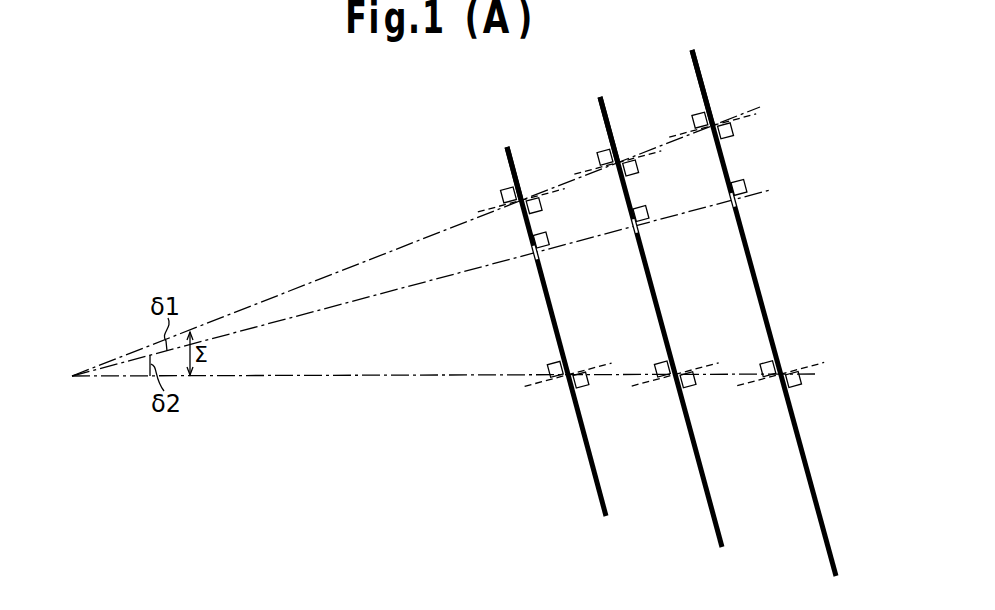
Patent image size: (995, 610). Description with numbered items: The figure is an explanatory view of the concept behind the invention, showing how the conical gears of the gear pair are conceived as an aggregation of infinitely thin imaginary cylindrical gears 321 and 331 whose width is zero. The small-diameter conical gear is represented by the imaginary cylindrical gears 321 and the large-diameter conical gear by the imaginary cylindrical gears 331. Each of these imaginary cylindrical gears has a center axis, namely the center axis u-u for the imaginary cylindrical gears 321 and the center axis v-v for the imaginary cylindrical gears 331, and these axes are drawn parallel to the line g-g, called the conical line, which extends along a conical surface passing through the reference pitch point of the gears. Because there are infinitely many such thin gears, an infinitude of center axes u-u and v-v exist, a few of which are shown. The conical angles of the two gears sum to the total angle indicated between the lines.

The imaginary cylindrical gear 321 is at (509, 168).
The imaginary cylindrical gear 331 is at (553, 311).
The center axis u- u is at (610, 162).
The center axis v- v is at (674, 376).
The conical line g- g is at (423, 280).